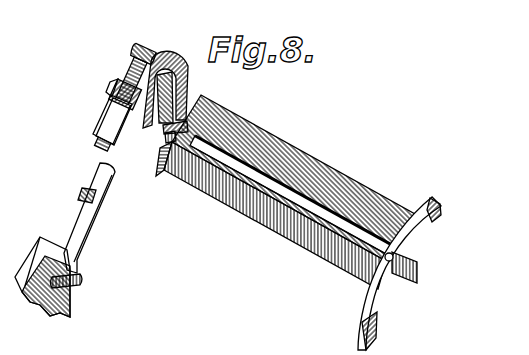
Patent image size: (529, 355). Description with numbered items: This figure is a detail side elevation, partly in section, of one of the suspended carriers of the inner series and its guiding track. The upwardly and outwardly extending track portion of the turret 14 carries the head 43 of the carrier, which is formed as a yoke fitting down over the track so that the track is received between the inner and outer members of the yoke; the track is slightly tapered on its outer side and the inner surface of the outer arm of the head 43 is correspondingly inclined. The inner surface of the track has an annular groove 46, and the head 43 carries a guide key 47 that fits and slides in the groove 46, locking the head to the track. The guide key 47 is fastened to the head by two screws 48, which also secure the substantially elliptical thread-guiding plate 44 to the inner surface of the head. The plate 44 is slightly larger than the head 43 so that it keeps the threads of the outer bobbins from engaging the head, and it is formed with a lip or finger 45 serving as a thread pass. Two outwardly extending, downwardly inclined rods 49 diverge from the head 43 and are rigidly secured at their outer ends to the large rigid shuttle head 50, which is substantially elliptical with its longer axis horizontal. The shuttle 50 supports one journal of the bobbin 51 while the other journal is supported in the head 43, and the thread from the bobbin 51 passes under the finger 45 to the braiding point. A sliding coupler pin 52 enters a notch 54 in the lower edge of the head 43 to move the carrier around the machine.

The turret 14 is at (65, 300).
The head 43 is at (163, 72).
The thread-guiding plate 44 is at (103, 108).
The lip or finger 45 is at (147, 52).
The annular groove 46 is at (85, 198).
The guide key 47 is at (82, 183).
The screws 48 is at (116, 92).
The rods 49 is at (300, 196).
The head 50 is at (428, 200).
The bobbin 51 is at (267, 140).
The coupler pins 52 is at (40, 253).
The notches 54 is at (85, 163).